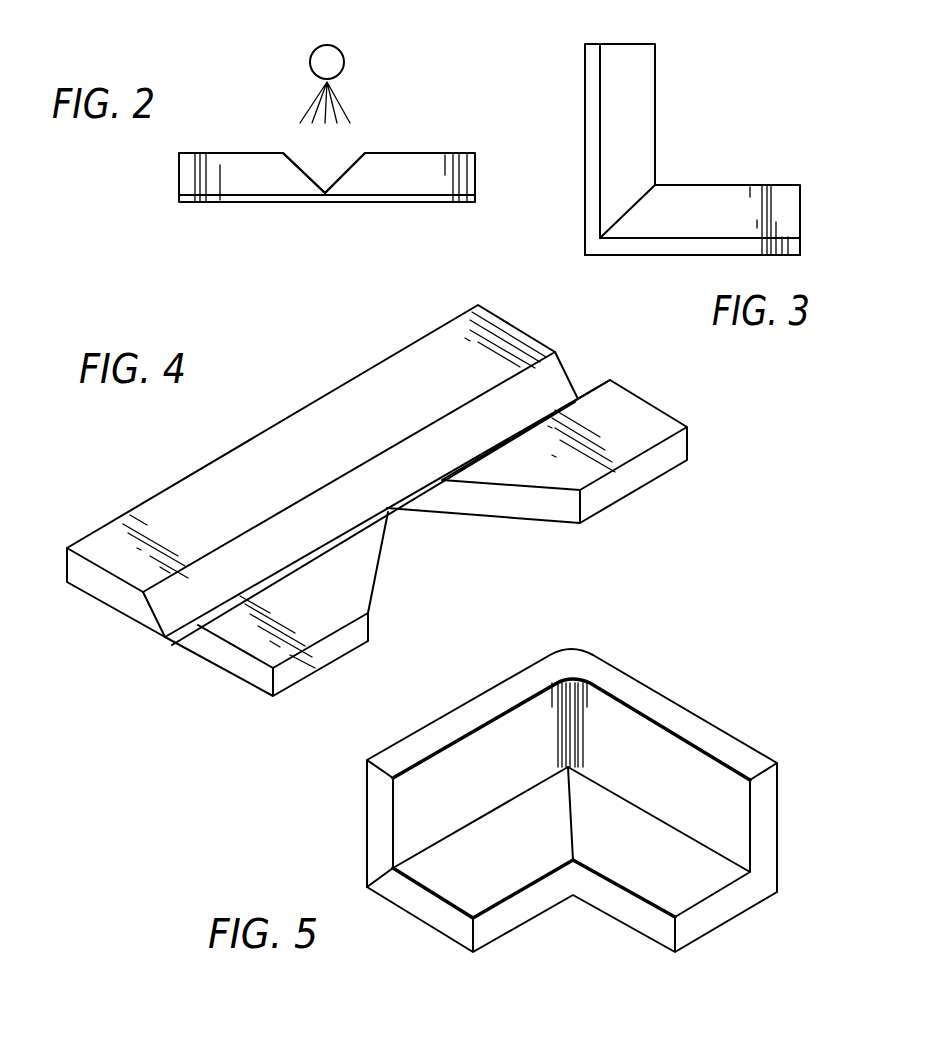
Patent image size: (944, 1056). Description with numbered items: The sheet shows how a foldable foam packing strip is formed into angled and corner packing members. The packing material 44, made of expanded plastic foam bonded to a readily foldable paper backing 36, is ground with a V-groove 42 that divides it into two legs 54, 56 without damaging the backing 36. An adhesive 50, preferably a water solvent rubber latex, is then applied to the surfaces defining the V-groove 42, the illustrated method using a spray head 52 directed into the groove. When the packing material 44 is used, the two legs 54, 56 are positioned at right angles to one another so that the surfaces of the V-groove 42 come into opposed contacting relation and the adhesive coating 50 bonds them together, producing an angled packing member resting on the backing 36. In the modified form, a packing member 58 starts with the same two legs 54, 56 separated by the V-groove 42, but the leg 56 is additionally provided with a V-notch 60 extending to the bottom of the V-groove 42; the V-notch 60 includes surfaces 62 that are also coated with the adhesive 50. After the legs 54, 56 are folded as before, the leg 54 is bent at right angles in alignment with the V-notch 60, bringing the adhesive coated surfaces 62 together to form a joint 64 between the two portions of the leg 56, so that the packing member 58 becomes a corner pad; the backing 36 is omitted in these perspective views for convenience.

In FIG. 3, the backing 36 is at (675, 247).
In FIG. 2, the V-groove 42 is at (295, 157).
In FIG. 4, the V-groove 42 is at (248, 537).
In FIG. 2, the packing material 44 is at (229, 207).
In FIG. 3, the packing material 44 is at (712, 155).
In FIG. 2, the adhesive 50 is at (347, 167).
In FIG. 3, the adhesive 50 is at (620, 213).
In FIG. 2, the spray head 52 is at (332, 63).
In FIG. 2, the leg 54 is at (183, 172).
In FIG. 3, the leg 54 is at (633, 105).
In FIG. 4, the leg 54 is at (188, 488).
In FIG. 5, the leg 54 is at (463, 683).
In FIG. 2, the leg 56 is at (417, 178).
In FIG. 3, the leg 56 is at (718, 197).
In FIG. 4, the leg 56 is at (308, 692).
In FIG. 5, the leg 56 is at (638, 878).
In FIG. 4, the packing member 58 is at (158, 656).
In FIG. 5, the packing member 58 is at (592, 640).
In FIG. 4, the V-notch 60 is at (440, 543).
In FIG. 4, the surfaces 62 is at (372, 606).
In FIG. 5, the joint 64 is at (570, 822).